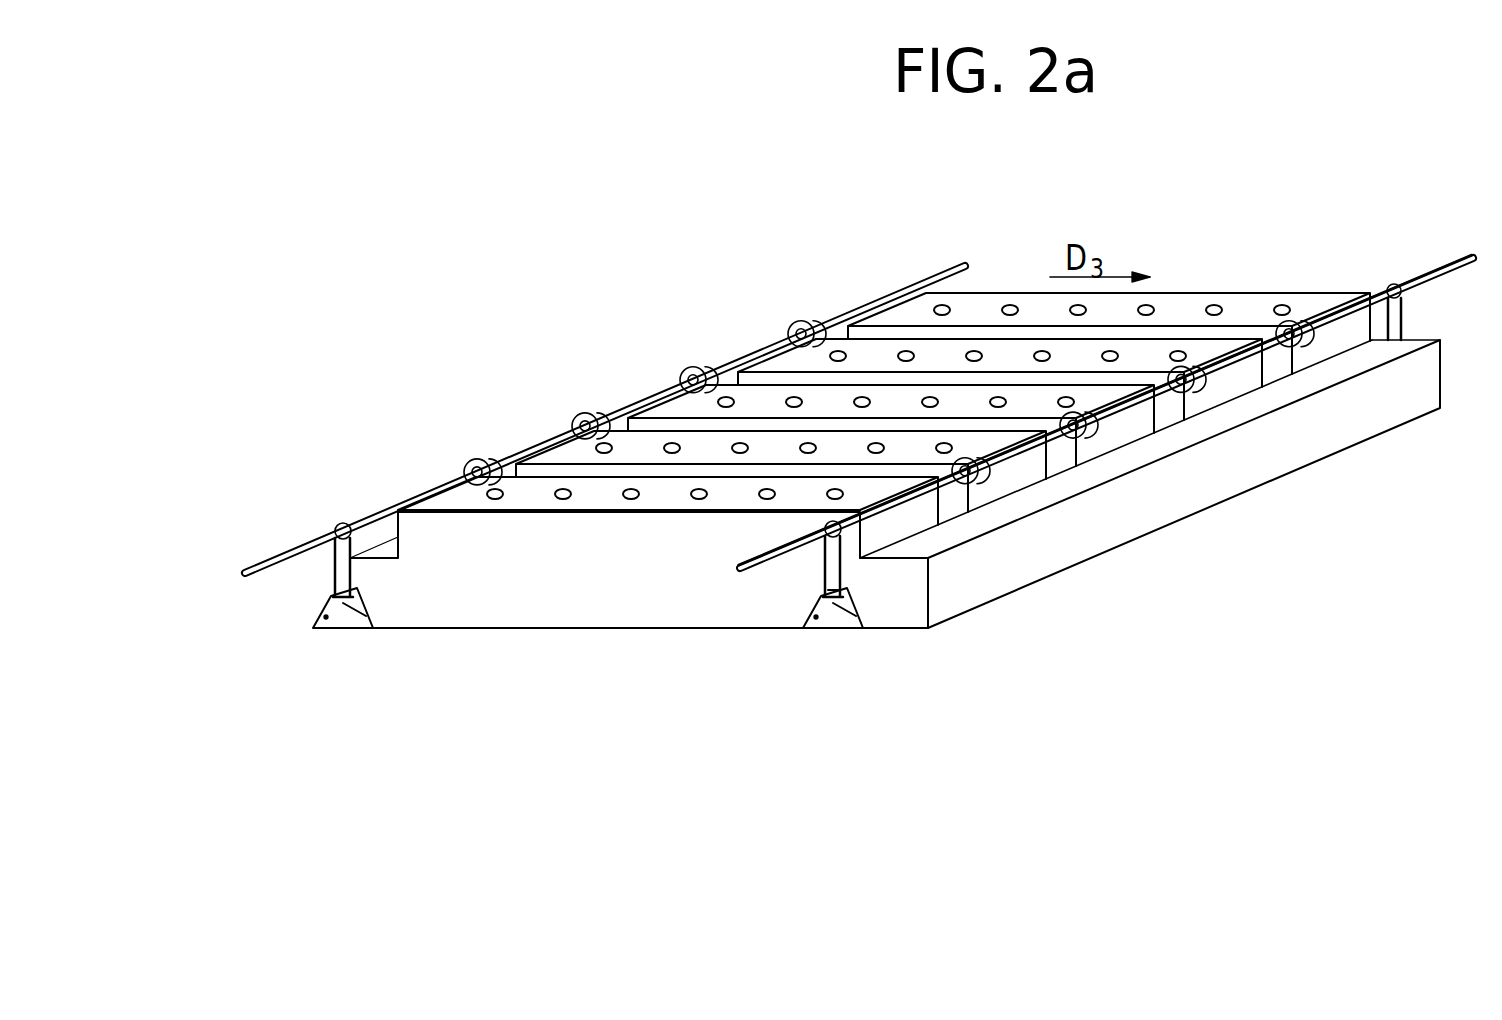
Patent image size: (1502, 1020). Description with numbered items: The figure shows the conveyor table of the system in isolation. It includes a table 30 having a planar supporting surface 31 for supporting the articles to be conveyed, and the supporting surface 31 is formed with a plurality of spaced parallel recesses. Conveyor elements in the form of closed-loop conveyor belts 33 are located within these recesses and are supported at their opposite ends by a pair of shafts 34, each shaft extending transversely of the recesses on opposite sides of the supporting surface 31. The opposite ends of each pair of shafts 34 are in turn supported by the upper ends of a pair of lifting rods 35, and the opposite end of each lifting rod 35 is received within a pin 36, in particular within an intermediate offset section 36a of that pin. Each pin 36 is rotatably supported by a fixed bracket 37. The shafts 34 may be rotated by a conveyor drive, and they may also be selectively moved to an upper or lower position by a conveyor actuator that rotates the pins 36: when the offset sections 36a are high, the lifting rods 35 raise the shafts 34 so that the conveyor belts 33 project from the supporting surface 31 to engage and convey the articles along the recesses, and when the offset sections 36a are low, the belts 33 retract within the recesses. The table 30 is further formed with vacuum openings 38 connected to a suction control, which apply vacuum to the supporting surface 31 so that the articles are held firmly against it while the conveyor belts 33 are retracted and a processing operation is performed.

The table 30 is at (590, 629).
The planar supporting surface 31 is at (660, 507).
The conveyor belts 33 is at (804, 320).
The shafts 34 is at (966, 264).
The lifting rods 35 is at (838, 568).
The pin 36 is at (370, 630).
The intermediate offset section 36a is at (328, 596).
The fixed bracket 37 is at (822, 632).
The vacuum openings 38 is at (490, 498).